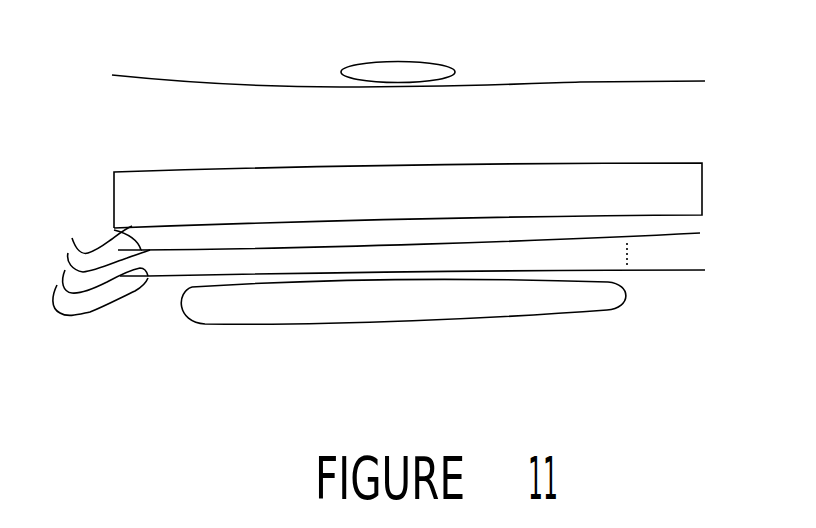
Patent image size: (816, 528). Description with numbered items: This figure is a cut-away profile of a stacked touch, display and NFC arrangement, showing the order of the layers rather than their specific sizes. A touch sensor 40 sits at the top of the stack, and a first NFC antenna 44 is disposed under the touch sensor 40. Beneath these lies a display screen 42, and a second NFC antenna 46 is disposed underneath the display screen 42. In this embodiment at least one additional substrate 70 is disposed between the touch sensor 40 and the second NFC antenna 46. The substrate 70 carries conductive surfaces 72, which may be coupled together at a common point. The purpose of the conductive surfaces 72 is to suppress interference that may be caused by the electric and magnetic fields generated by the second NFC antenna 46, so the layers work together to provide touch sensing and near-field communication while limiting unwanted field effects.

The touch sensor 40 is at (690, 127).
The display screen 42 is at (688, 193).
The first NFC antenna 44 is at (452, 67).
The second NFC antenna 46 is at (597, 310).
The substrate 70 is at (712, 235).
The conductive surfaces 72 is at (68, 253).